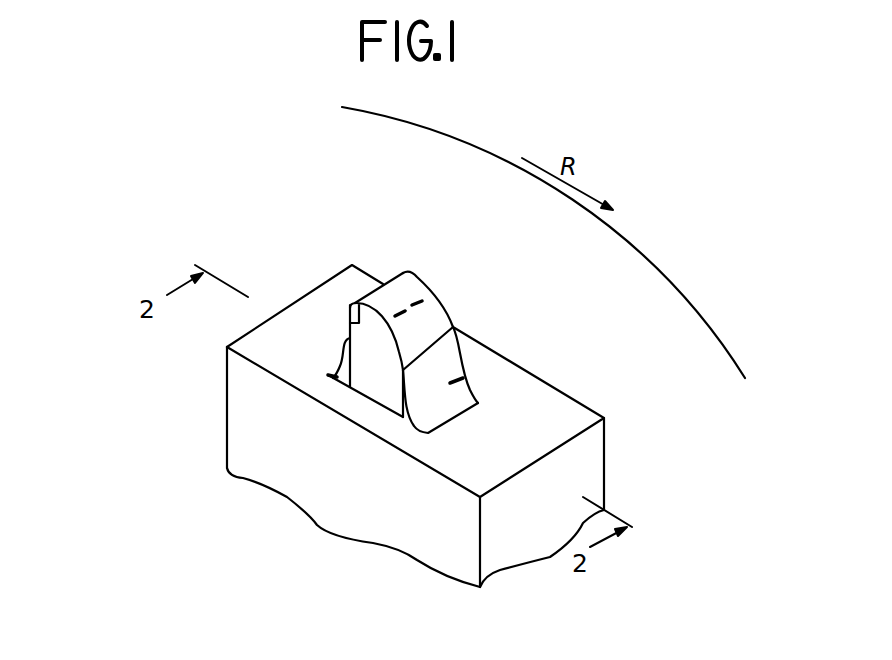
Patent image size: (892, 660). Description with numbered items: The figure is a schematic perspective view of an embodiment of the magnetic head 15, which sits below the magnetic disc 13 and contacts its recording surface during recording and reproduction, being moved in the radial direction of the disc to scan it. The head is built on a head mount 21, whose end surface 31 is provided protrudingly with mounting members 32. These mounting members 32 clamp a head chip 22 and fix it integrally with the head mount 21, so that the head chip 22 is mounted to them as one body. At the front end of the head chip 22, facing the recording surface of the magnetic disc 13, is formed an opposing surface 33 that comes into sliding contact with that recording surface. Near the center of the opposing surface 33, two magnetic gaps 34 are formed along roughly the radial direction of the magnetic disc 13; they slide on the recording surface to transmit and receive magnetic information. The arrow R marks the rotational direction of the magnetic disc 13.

The magnetic disc 13 is at (692, 300).
The magnetic head 15 is at (224, 440).
The head mount 21 is at (335, 500).
The head chip 22 is at (373, 378).
The end surface 31 is at (548, 427).
The mounting members 32 is at (341, 356).
The opposing surface 33 is at (425, 328).
The magnetic gaps 34 is at (400, 310).